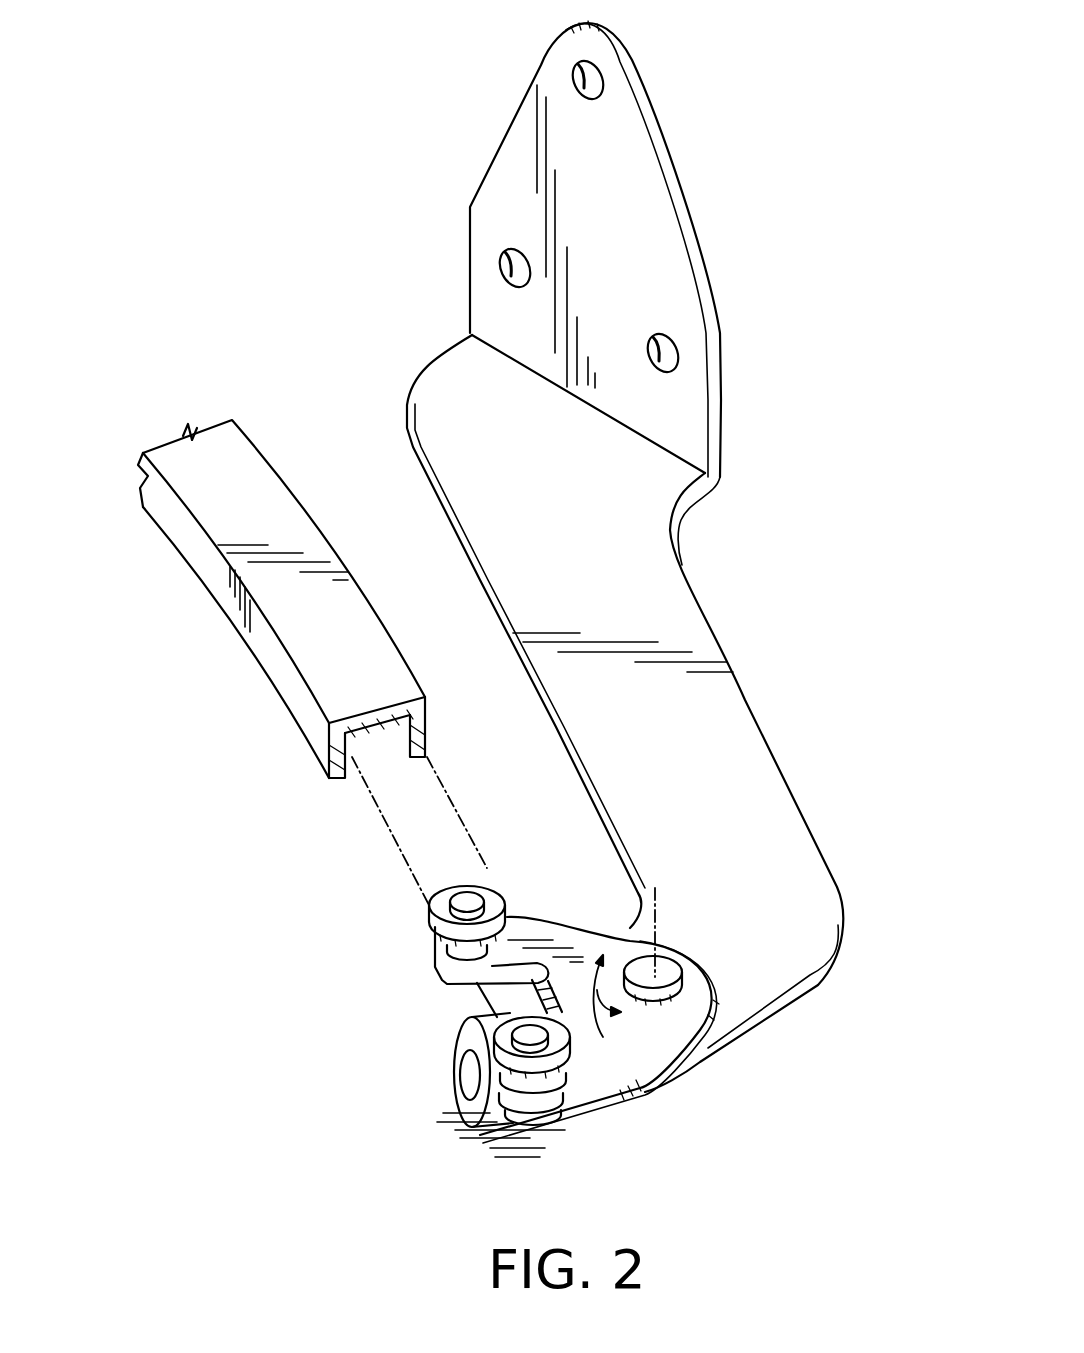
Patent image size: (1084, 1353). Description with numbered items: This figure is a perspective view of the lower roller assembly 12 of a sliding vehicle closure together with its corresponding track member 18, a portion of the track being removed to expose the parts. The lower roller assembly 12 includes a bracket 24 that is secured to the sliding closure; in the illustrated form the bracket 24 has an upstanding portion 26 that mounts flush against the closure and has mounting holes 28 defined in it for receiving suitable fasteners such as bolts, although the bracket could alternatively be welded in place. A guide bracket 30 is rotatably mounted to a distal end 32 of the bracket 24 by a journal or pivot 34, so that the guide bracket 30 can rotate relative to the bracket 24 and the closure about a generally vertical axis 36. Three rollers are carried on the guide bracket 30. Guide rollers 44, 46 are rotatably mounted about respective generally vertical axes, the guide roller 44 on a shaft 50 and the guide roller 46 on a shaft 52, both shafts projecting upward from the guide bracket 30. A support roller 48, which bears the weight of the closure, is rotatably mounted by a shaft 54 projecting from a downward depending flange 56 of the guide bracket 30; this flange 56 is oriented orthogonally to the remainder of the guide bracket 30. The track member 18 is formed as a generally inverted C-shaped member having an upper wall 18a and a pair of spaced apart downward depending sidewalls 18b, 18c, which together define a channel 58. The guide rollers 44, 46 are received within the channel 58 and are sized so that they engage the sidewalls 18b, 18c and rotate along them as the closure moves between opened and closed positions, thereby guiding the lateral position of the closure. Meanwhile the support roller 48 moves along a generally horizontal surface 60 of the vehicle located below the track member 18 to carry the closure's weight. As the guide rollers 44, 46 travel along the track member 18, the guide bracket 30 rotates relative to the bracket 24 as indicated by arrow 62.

The lower roller assembly 12 is at (360, 1070).
The track member 18 is at (268, 465).
The upper wall 18a is at (390, 722).
The downward depending sidewall 18b is at (328, 748).
The downward depending sidewall 18c is at (425, 722).
The bracket 24 is at (742, 697).
The upstanding portion 26 is at (643, 193).
The mounting holes 28 is at (590, 78).
The guide bracket 30 is at (607, 1110).
The distal end 32 is at (693, 1055).
The pivot 34 is at (667, 970).
The generally vertical axis 36 is at (660, 903).
The guide roller 44 is at (428, 925).
The guide roller 46 is at (541, 1075).
The support roller 48 is at (458, 1033).
The shaft 50 is at (467, 902).
The shaft 52 is at (530, 1040).
The shaft 54 is at (462, 1087).
The downward depending flange 56 is at (508, 997).
The channel 58 is at (367, 743).
The generally horizontal surface 60 is at (493, 1140).
The arrow 62 is at (610, 1013).